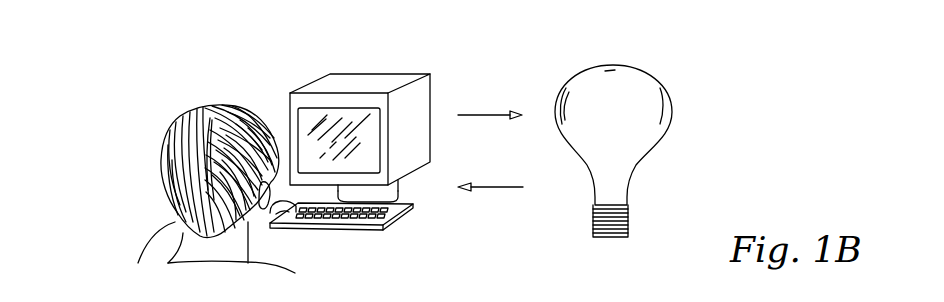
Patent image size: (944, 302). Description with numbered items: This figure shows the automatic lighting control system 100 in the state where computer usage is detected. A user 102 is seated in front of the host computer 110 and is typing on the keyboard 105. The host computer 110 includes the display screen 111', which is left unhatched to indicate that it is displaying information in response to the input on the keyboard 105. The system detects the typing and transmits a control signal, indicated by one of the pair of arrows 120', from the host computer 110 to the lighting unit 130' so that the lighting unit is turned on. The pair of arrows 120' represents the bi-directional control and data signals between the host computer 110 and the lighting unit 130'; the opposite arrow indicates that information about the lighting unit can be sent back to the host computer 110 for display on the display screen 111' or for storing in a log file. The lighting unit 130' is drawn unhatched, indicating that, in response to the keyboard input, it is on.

The automatic lighting control system 100 is at (213, 59).
The user 102 is at (157, 129).
The keyboard 105 is at (397, 220).
The host computer 110 is at (373, 65).
The display screen 111' is at (336, 108).
The pair of arrows 120' is at (490, 125).
The lighting unit 130' is at (613, 121).